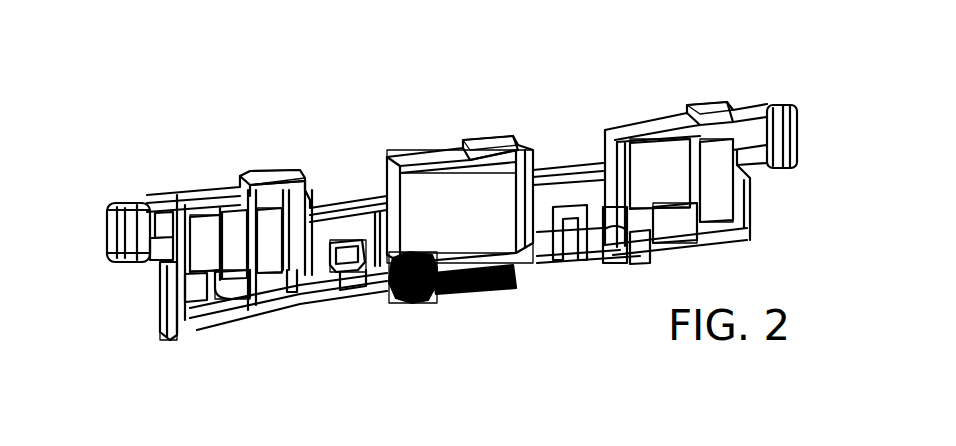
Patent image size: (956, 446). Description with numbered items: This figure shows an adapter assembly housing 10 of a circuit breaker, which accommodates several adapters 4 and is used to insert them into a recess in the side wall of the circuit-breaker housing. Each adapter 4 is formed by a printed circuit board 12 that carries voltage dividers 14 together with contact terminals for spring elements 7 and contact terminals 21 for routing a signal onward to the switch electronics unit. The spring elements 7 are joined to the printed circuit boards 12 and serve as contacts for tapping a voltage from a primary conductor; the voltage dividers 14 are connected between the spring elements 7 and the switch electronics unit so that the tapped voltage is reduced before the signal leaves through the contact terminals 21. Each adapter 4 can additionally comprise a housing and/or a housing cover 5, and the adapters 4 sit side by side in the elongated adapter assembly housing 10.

The adapter assembly housing 10 is at (133, 198).
The adapter 4 is at (240, 243).
The contact terminals 21 is at (270, 172).
The housing cover 5 is at (423, 187).
The spring elements 7 is at (178, 340).
The printed circuit boards 12 is at (230, 275).
The voltage dividers 14 is at (267, 263).